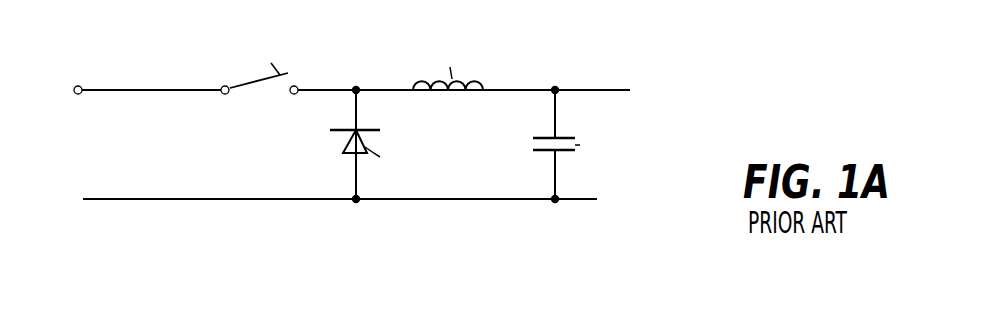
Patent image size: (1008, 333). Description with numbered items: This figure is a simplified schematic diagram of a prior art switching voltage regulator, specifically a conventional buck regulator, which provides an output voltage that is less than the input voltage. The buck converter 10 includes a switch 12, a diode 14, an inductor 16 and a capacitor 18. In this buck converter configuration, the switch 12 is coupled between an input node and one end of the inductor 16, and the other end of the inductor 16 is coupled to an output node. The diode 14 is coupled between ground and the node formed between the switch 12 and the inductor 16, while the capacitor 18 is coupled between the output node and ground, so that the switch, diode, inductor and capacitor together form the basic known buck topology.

The buck converter 10 is at (672, 158).
The switch 12 is at (262, 84).
The diode 14 is at (343, 150).
The inductor 16 is at (412, 82).
The capacitor 18 is at (537, 143).